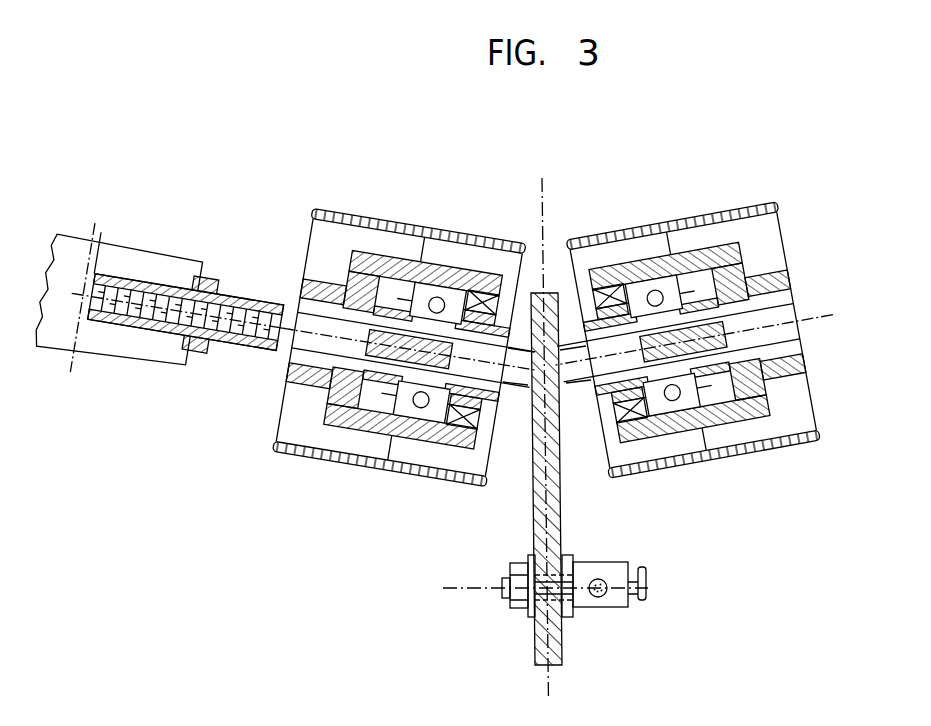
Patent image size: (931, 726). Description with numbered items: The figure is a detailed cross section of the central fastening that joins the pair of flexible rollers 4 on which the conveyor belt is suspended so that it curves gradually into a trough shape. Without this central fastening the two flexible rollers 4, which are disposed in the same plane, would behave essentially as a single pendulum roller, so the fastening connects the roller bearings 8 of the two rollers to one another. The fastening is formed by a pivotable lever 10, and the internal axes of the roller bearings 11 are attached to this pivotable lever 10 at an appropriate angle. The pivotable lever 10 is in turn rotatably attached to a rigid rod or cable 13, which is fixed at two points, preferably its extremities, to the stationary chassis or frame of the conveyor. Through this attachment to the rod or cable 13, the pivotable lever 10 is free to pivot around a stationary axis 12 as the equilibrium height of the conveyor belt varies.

The flexible roller 4 is at (147, 267).
The roller bearing 8 is at (667, 217).
The pivotable lever 10 is at (532, 497).
The internal axes of the roller bearings 11 is at (562, 387).
The stationary axis 12 is at (478, 588).
The rigid rod or cable 13 is at (597, 603).